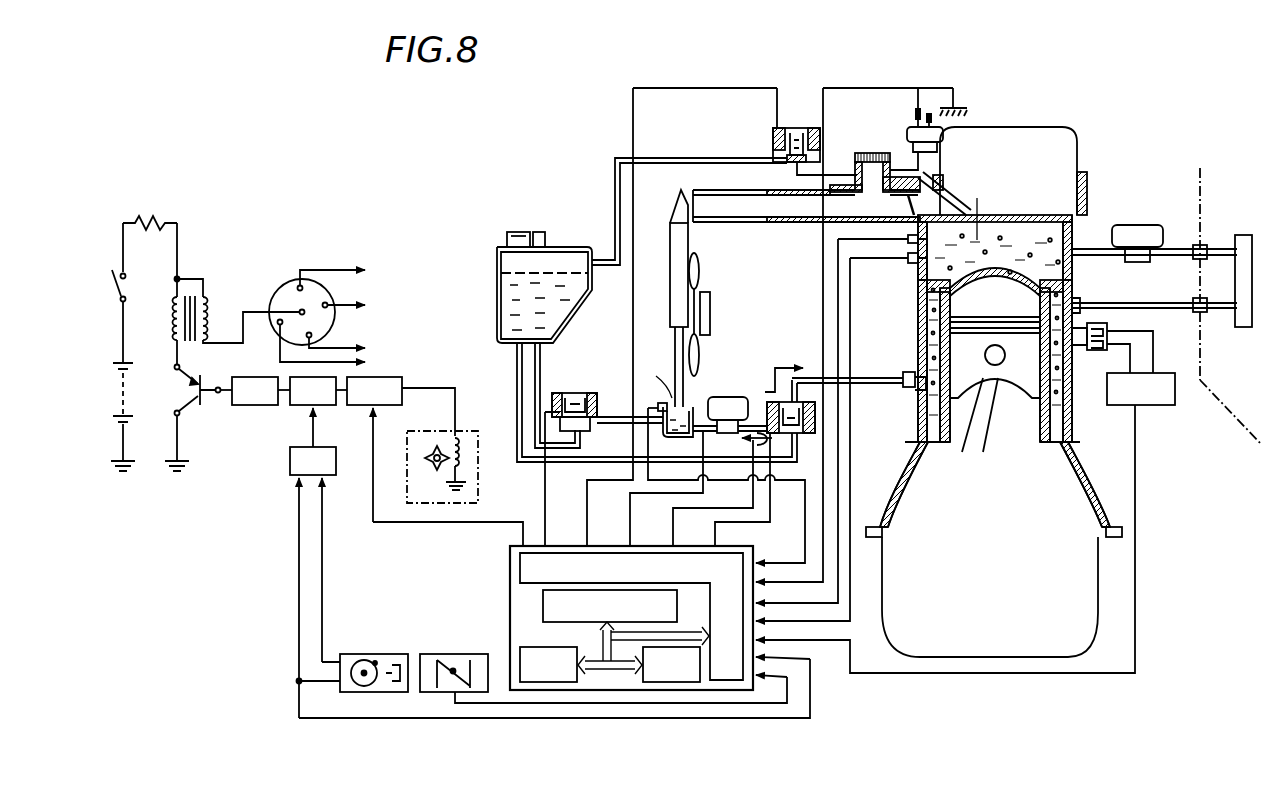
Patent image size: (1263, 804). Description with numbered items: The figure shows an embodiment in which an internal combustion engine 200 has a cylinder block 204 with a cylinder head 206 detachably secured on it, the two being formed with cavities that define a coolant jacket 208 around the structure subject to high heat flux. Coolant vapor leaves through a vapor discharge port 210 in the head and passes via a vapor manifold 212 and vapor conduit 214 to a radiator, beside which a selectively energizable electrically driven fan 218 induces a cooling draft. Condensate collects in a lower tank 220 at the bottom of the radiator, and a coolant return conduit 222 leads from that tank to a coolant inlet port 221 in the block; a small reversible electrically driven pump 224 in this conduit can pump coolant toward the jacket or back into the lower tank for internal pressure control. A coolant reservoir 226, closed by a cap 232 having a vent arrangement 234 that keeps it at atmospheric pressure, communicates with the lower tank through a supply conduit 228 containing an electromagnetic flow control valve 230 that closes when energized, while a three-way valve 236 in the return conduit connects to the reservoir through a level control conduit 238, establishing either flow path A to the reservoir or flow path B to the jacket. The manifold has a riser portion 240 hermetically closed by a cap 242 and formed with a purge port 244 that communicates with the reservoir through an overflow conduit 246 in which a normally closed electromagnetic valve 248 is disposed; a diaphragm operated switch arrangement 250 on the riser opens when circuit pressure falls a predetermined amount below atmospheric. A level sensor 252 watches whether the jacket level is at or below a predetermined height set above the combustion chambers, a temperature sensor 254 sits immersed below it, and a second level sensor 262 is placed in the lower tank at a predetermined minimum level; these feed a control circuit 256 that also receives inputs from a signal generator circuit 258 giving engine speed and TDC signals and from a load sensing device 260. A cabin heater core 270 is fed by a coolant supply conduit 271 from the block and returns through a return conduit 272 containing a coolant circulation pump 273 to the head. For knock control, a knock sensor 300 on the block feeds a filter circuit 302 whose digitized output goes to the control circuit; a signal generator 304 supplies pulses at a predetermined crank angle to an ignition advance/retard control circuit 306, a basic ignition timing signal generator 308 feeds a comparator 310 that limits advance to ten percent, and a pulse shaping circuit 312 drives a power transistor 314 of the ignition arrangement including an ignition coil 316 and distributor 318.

The internal combustion engine 200 is at (1100, 455).
The cylinder block 204 is at (1053, 443).
The cylinder head 206 is at (1082, 190).
The coolant jacket 208 is at (1025, 245).
The vapor discharge port 210 is at (922, 207).
The vapor manifold 212 is at (855, 220).
The vapor conduit 214 is at (743, 222).
The electrically driven fan 218 is at (712, 306).
The lower tank 220 is at (664, 436).
The coolant inlet port 221 is at (915, 389).
The coolant return conduit 222 is at (876, 378).
The electrically driven pump 224 is at (725, 397).
The coolant reservoir 226 is at (497, 265).
The supply conduit 228 is at (534, 399).
The electromagnetic flow control valve 230 is at (573, 393).
The cap 232 is at (516, 232).
The vent arrangement 234 is at (539, 232).
The three-way valve 236 is at (818, 413).
The level control conduit 238 is at (516, 374).
The riser portion 240 is at (897, 170).
The cap 242 is at (871, 153).
The purge port 244 is at (853, 177).
The overflow conduit 246 is at (700, 157).
The electromagnetic valve 248 is at (773, 140).
The diaphragm operated switch arrangement 250 is at (949, 127).
The level sensor 252 is at (907, 241).
The temperature sensor 254 is at (909, 264).
The control circuit 256 is at (510, 574).
The signal generator circuit 258 is at (363, 652).
The load sensing device 260 is at (458, 652).
The second level sensor 262 is at (657, 404).
The heater core 270 is at (1243, 330).
The coolant supply conduit 271 is at (1105, 303).
The return conduit 272 is at (1100, 248).
The coolant circulation pump 273 is at (1155, 225).
The knock sensor 300 is at (1088, 352).
The filter circuit 302 is at (1165, 405).
The signal generator 304 is at (428, 505).
The ignition advance/retard control circuit 306 is at (396, 382).
The basic ignition timing signal generator 308 is at (289, 461).
The comparator 310 is at (295, 407).
The pulse shaping circuit 312 is at (238, 407).
The power transistor 314 is at (195, 390).
The ignition coil 316 is at (210, 305).
The distributor 318 is at (335, 320).